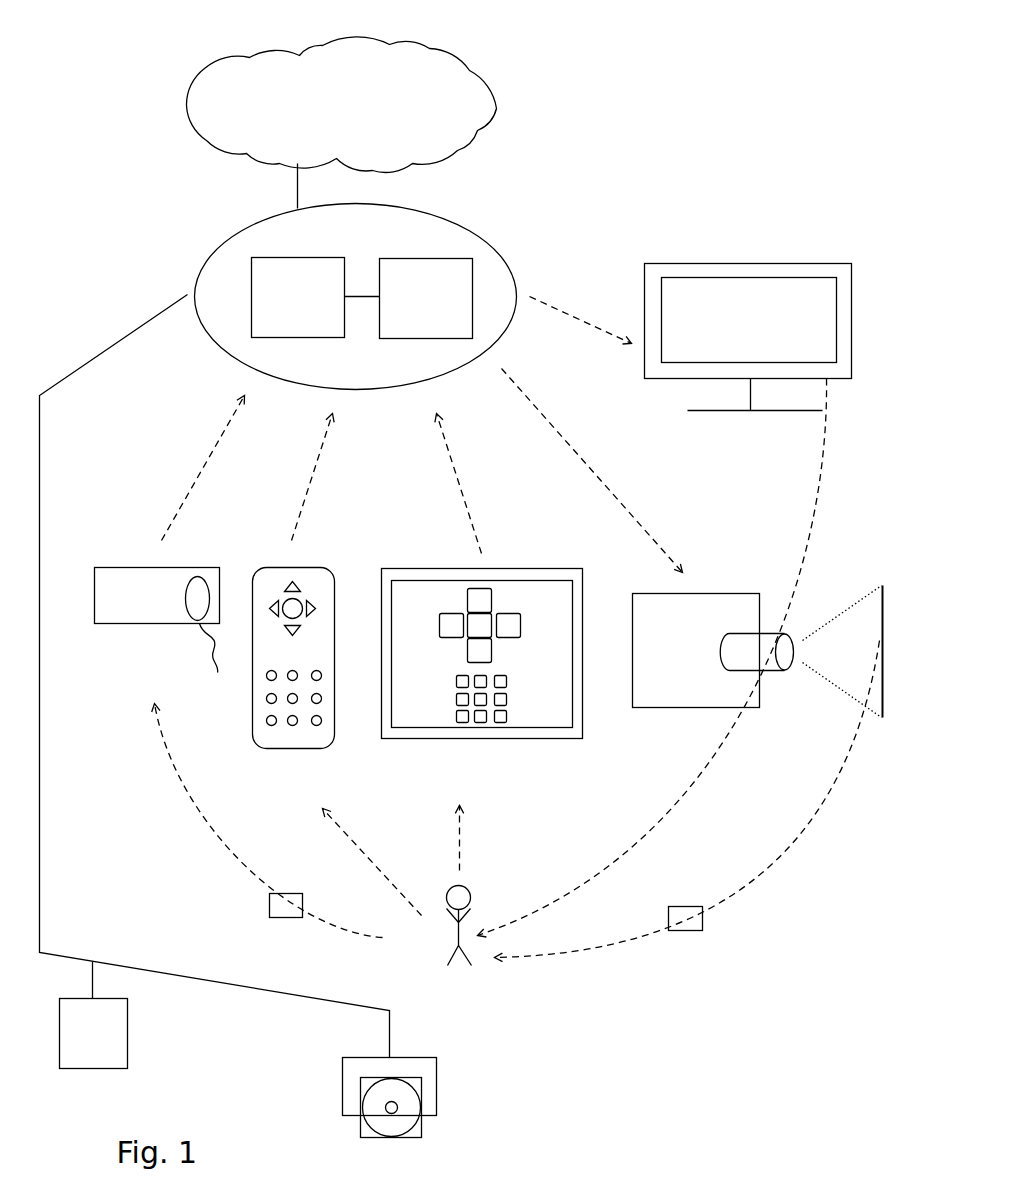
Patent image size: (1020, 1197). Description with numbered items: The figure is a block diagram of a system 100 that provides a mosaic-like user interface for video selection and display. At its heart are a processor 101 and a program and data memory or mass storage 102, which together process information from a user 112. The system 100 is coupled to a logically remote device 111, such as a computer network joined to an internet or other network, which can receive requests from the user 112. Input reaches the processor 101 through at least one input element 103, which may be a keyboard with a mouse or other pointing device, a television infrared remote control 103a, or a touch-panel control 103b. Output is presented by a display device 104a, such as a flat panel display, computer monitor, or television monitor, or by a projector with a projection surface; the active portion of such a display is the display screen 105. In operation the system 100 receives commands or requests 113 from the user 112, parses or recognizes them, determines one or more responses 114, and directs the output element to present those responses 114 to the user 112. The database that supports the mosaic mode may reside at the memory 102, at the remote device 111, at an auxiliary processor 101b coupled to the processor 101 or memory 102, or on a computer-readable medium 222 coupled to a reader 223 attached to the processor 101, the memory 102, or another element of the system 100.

The system 100 is at (713, 83).
The logically remote device 111 is at (341, 105).
The processor 101 is at (298, 288).
The program and data memory or mass storage 102 is at (426, 288).
The input element 103 is at (117, 575).
The television infrared remote control 103a is at (265, 708).
The touch-panel control 103b is at (550, 705).
The display device 104a is at (768, 273).
The display screen 105 is at (707, 283).
The user 112 is at (463, 956).
The commands or requests 113 is at (288, 918).
The responses 114 is at (683, 938).
The auxiliary processor 101b is at (94, 1034).
The computer-readable medium 222 is at (405, 1120).
The reader 223 is at (420, 1068).